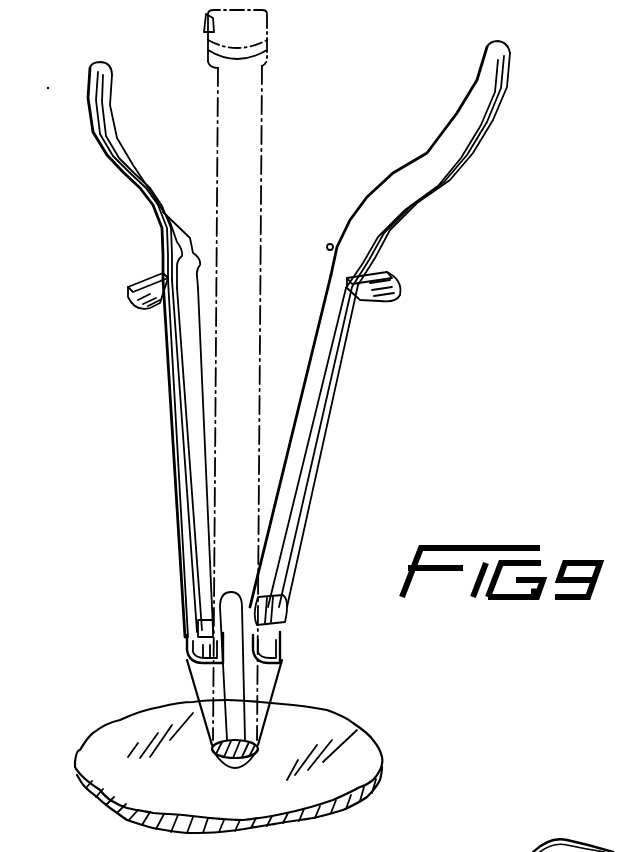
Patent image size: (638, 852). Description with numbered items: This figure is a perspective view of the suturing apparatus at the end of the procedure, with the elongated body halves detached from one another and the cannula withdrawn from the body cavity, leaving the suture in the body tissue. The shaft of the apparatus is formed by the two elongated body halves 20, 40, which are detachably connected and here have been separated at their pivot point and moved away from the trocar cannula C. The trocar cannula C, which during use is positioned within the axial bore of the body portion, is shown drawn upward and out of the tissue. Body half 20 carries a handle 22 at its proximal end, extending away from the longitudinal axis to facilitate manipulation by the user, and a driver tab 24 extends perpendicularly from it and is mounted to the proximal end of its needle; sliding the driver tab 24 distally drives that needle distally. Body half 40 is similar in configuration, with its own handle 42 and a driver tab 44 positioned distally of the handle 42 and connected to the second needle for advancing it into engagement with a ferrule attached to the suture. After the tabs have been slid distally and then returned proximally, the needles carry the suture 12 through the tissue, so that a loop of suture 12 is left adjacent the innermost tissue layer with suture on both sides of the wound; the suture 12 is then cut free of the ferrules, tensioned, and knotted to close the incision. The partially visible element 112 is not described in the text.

The trocar cannula C is at (261, 117).
The suture 12 is at (280, 677).
The body half 20 is at (126, 349).
The handle 22 is at (93, 117).
The driver tab 24 is at (127, 288).
The body half 40 is at (400, 324).
The handle 42 is at (487, 123).
The driver tab 44 is at (387, 293).
The adjacent device portion 112 is at (527, 851).